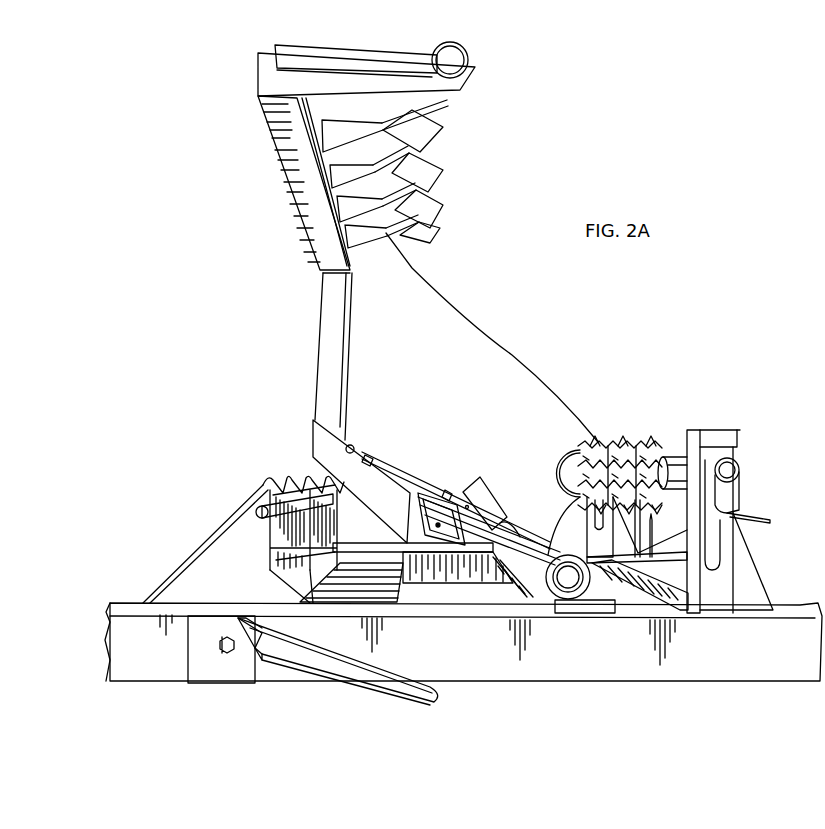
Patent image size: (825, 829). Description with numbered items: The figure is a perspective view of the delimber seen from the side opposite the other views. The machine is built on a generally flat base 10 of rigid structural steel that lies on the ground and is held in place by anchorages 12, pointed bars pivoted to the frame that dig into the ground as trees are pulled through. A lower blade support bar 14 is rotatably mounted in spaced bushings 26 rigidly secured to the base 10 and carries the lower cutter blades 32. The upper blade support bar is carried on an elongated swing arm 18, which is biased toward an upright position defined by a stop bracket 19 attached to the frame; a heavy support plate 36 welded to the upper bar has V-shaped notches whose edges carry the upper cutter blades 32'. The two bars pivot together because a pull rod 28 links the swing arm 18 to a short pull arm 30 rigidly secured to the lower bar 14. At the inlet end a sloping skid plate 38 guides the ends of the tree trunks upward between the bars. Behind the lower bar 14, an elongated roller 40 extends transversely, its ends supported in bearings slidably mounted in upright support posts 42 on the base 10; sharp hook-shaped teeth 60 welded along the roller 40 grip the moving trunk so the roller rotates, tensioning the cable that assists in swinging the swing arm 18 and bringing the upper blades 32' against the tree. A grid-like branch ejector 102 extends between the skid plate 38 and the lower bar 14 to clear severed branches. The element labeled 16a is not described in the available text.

The base 10 is at (421, 641).
The anchorages 12 is at (353, 677).
The lower blade support bar 14 is at (538, 534).
The pivot roller 16a is at (468, 55).
The swing arm 18 is at (346, 380).
The stop bracket 19 is at (320, 437).
The bushings 26 is at (546, 572).
The pull rod 28 is at (397, 473).
The pull arm 30 is at (482, 495).
The lower cutter blades 32 is at (424, 519).
The upper cutter blades 32' is at (400, 174).
The support plate 36 is at (324, 107).
The skid plate 38 is at (216, 517).
The roller 40 is at (637, 422).
The upright support posts 42 is at (698, 433).
The hook-shaped teeth 60 is at (631, 443).
The branch ejector 102 is at (406, 574).